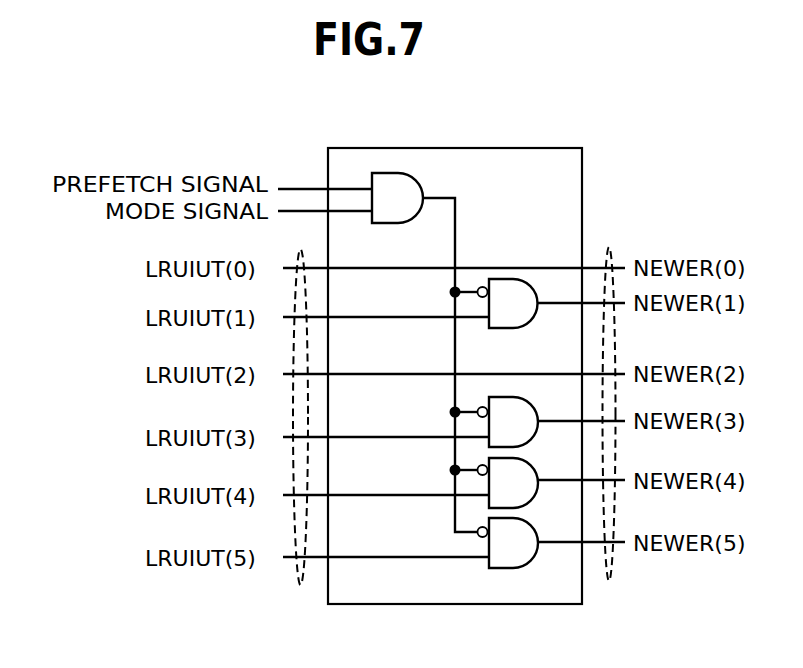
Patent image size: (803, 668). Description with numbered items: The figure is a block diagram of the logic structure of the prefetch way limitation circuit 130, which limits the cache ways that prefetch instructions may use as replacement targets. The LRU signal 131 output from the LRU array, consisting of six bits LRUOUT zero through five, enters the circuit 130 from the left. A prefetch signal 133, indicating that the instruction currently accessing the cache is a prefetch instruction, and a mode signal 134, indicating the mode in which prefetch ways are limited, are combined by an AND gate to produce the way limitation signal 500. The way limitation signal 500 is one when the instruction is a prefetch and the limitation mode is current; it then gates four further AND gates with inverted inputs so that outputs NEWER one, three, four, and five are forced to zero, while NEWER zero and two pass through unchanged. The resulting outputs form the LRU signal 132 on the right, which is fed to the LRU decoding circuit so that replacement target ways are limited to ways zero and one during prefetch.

The prefetch way limitation circuit 130 is at (582, 170).
The LRU signal 131 is at (300, 565).
The LRU signal 132 is at (615, 563).
The prefetch signal 133 is at (306, 186).
The mode signal 134 is at (302, 214).
The way limitation signal 500 is at (457, 218).